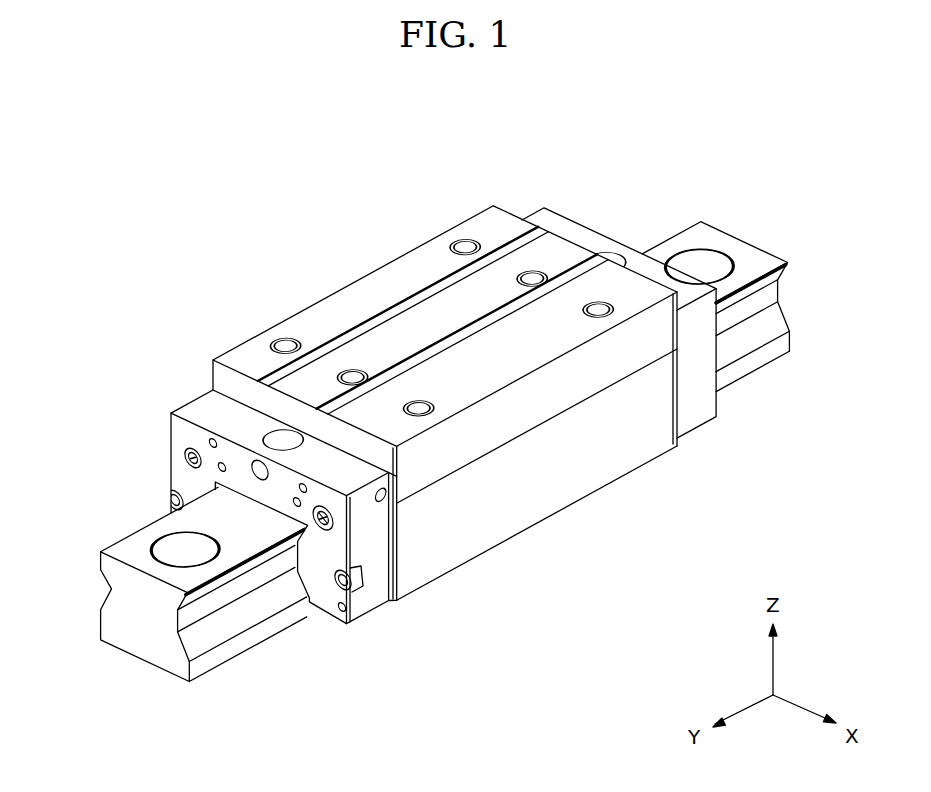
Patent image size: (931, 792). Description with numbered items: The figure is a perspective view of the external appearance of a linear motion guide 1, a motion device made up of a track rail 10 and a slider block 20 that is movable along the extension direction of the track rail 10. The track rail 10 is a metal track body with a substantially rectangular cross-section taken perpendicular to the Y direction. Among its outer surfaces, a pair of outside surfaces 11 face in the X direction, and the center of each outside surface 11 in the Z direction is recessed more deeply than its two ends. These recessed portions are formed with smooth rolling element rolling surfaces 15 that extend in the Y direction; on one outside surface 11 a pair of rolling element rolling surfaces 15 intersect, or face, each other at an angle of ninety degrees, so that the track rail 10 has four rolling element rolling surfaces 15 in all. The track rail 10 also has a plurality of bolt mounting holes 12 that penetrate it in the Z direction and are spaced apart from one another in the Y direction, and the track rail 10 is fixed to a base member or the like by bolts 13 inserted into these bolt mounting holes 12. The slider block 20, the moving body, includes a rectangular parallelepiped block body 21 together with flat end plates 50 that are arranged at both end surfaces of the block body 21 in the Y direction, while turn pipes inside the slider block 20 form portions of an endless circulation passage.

The linear motion guide 1 is at (364, 212).
The track rail 10 is at (150, 658).
The outside surface 11 is at (262, 603).
The bolt mounting hole 12 is at (176, 538).
The bolt 13 is at (178, 540).
The rolling element rolling surface 15 is at (106, 574).
The slider block 20 is at (521, 484).
The block body 21 is at (609, 458).
The end plate 50 is at (374, 597).